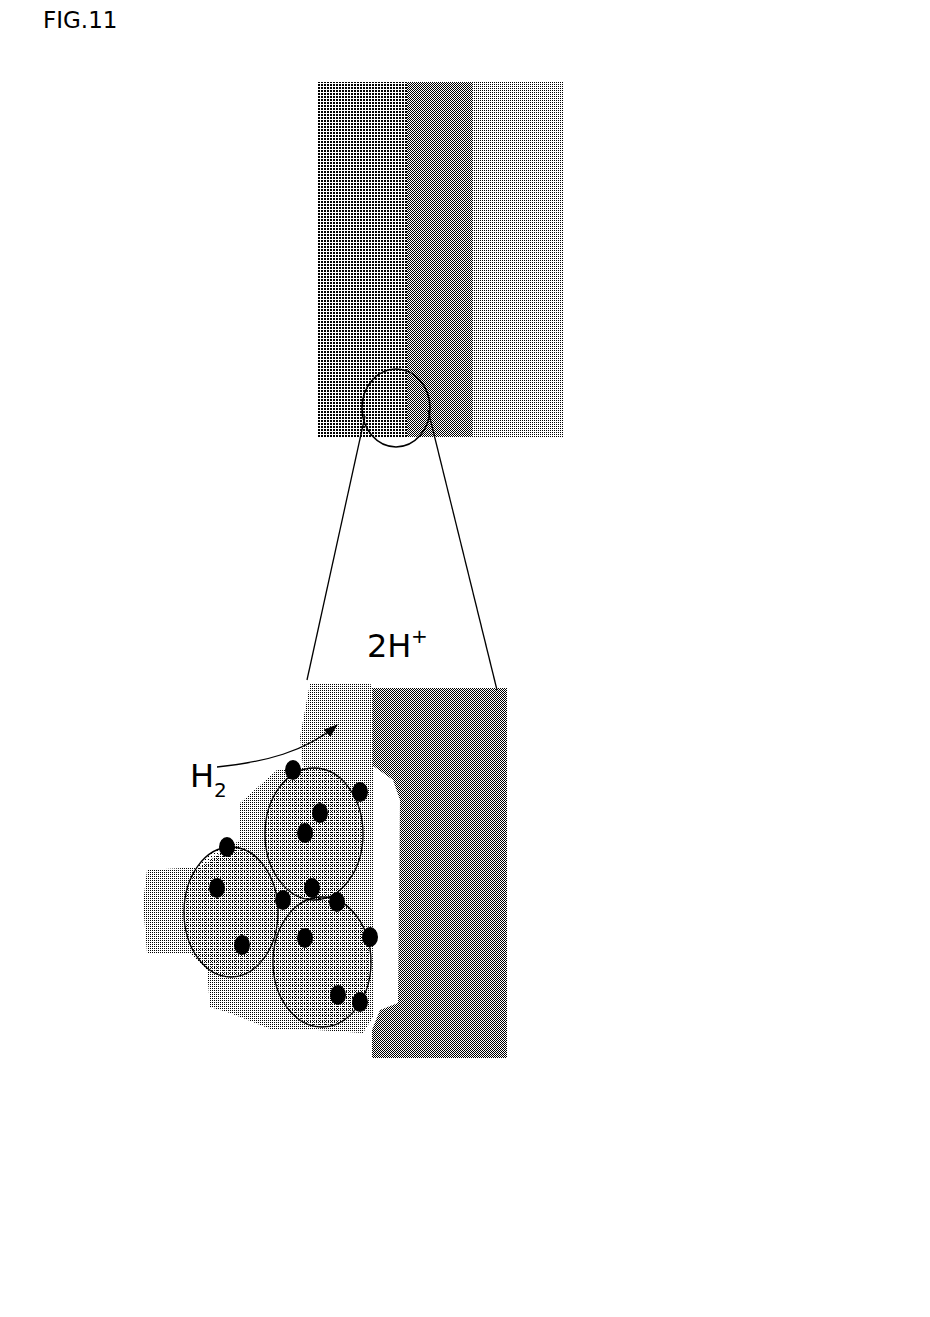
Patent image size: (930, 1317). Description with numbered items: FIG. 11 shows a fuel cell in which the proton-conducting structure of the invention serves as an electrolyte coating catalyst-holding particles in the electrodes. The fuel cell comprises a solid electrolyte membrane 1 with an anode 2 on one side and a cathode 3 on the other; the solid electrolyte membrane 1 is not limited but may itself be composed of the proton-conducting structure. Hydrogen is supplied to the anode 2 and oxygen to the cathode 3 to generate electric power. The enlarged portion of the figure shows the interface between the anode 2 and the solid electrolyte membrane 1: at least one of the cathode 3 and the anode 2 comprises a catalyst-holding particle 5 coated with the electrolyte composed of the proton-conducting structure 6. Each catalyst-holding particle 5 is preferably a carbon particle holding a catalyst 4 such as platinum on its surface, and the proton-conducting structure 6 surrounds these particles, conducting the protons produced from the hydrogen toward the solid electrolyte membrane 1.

The solid electrolyte membrane 1 is at (440, 117).
The anode 2 is at (348, 358).
The cathode 3 is at (528, 358).
The catalyst 4 is at (213, 847).
The catalyst-holding particle 5 is at (207, 947).
The proton-conducting structure 6 is at (262, 990).